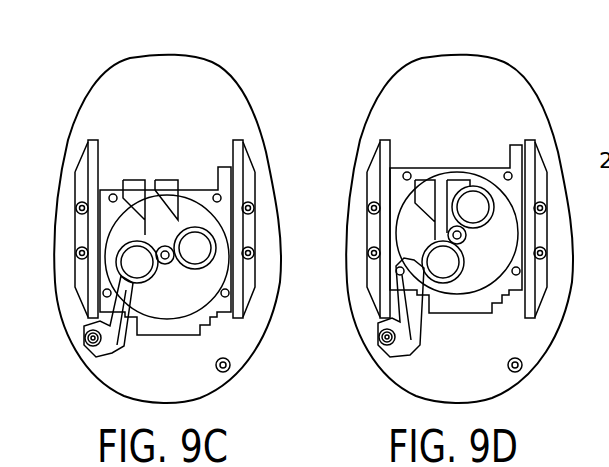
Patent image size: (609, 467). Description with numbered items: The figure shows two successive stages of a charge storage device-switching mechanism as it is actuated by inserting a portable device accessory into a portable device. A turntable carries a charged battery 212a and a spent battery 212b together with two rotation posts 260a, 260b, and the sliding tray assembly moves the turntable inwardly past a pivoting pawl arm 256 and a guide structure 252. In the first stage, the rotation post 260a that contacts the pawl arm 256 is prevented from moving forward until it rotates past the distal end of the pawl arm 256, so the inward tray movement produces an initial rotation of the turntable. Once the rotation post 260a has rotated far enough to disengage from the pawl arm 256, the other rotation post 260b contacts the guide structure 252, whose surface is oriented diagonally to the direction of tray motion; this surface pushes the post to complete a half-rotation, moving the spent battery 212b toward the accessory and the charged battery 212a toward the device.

In FIG. 9C, the guide structure 252 is at (172, 181).
In FIG. 9D, the guide structure 252 is at (452, 180).
In FIG. 9D, the pawl arm 256 is at (412, 266).
In FIG. 9C, the rotation post 260a is at (156, 282).
In FIG. 9D, the rotation post 260a is at (467, 253).
In FIG. 9C, the rotation post 260b is at (168, 230).
In FIG. 9D, the rotation post 260b is at (448, 216).
In FIG. 9C, the charged battery 212a is at (202, 253).
In FIG. 9D, the charged battery 212a is at (473, 203).
In FIG. 9C, the spent battery 212b is at (130, 262).
In FIG. 9D, the spent battery 212b is at (447, 263).